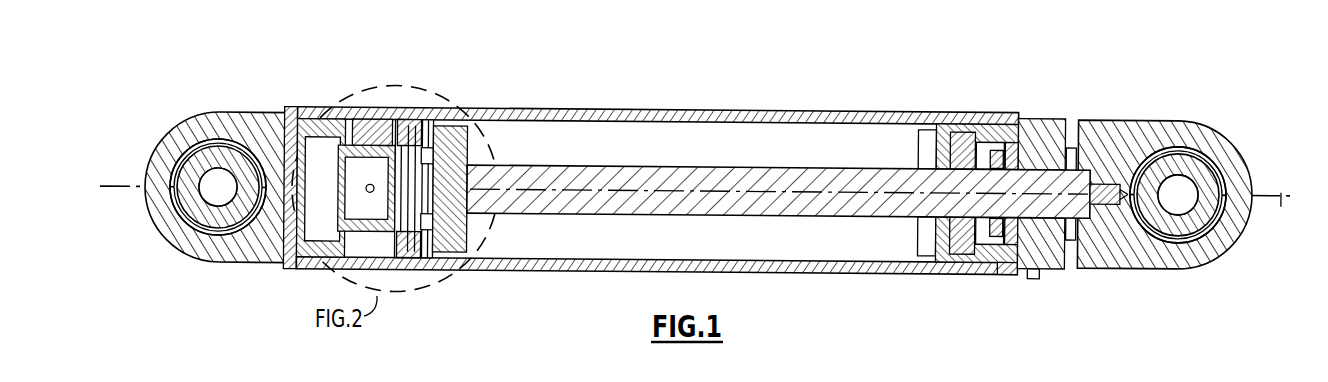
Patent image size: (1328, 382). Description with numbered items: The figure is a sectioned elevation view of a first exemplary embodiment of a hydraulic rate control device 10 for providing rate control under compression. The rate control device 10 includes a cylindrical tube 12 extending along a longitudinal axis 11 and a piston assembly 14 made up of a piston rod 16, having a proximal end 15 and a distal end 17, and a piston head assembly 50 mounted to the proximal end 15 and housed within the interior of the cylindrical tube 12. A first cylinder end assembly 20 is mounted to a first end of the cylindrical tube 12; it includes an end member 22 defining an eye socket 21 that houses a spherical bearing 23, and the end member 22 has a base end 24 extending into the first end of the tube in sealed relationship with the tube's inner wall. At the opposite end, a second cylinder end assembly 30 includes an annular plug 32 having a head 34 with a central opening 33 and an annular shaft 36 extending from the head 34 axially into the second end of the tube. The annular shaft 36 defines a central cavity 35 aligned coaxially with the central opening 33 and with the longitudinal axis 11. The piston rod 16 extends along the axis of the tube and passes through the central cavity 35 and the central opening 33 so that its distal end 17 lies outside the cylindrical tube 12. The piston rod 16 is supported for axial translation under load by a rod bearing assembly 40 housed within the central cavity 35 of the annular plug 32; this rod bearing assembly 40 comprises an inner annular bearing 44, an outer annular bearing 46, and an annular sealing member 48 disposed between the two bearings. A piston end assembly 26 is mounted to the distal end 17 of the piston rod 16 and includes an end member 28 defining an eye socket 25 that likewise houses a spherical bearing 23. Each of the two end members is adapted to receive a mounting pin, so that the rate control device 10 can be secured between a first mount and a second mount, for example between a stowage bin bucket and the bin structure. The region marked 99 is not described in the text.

The hydraulic rate control device 10 is at (697, 188).
The longitudinal axis 11 is at (697, 206).
The cylindrical tube 12 is at (684, 110).
The piston assembly 14 is at (425, 172).
The proximal end 15 is at (479, 222).
The piston rod 16 is at (727, 167).
The distal end 17 is at (1072, 168).
The first cylinder end assembly 20 is at (220, 175).
The eye socket 21 is at (236, 148).
The end member 22 is at (186, 266).
The spherical bearing 23 is at (226, 232).
The base end 24 is at (302, 272).
The eye socket 25 is at (1184, 186).
The piston end assembly 26 is at (1170, 189).
The end member 28 is at (1197, 267).
The second cylinder end assembly 30 is at (1021, 205).
The annular plug 32 is at (1046, 274).
The central opening 33 is at (1100, 266).
The head 34 is at (1066, 258).
The central cavity 35 is at (983, 140).
The annular shaft 36 is at (942, 274).
The rod bearing assembly 40 is at (1006, 130).
The inner annular bearing 44 is at (956, 126).
The outer annular bearing 46 is at (1052, 124).
The annular sealing member 48 is at (1008, 274).
The piston head assembly 50 is at (370, 124).
The piston 99 is at (404, 124).